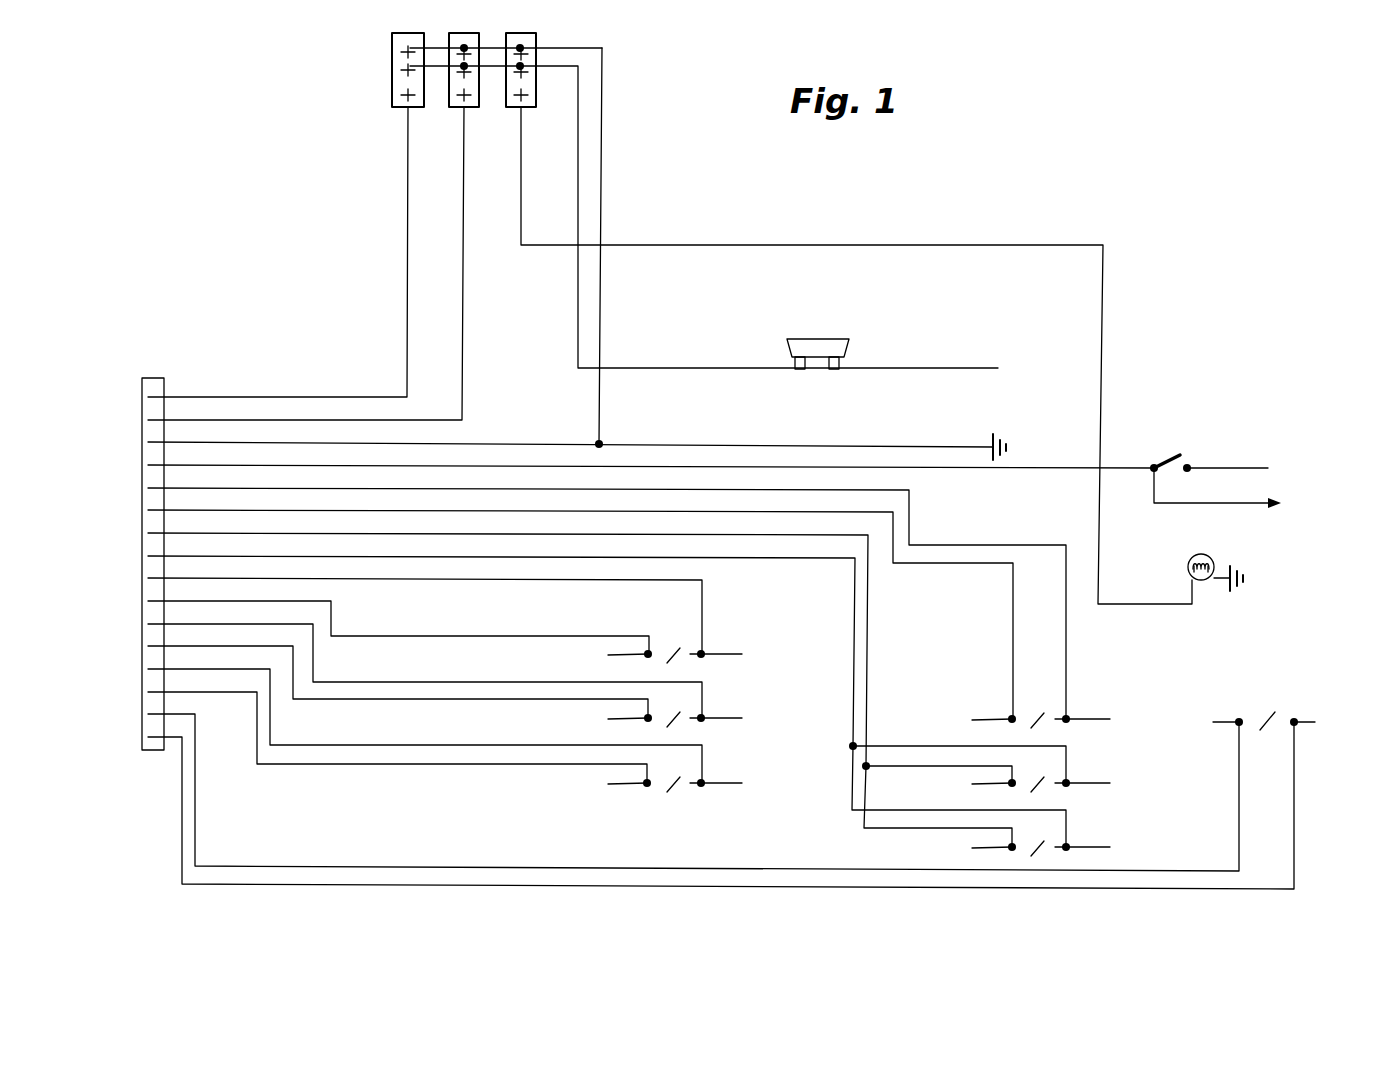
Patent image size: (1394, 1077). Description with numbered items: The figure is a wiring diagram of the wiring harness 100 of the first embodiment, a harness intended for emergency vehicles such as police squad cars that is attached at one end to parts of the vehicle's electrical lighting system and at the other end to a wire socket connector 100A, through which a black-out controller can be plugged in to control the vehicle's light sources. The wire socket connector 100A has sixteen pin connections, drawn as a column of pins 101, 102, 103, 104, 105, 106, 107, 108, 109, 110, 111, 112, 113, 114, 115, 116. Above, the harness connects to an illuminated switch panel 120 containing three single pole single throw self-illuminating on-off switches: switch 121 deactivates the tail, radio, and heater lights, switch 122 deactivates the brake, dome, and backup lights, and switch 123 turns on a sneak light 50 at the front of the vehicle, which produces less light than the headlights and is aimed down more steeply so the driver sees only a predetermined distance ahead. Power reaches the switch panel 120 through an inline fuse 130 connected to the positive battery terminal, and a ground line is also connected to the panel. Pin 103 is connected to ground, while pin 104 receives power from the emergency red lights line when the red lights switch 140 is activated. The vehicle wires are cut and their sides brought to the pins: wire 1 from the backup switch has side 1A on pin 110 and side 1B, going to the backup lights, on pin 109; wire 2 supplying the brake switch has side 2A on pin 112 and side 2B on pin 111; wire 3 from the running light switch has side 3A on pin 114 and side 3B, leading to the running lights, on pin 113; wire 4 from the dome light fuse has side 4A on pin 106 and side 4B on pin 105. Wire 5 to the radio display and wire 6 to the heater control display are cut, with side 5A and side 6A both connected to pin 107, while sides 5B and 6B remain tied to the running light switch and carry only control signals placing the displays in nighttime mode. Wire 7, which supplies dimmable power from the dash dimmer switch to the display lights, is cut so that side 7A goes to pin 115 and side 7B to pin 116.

The wiring harness 100 is at (1131, 219).
The wire socket connector 100A is at (150, 378).
The pin 101 is at (254, 257).
The pin 102 is at (282, 269).
The pin 103 is at (553, 254).
The pin 104 is at (627, 466).
The pin 105 is at (583, 599).
The pin 106 is at (556, 610).
The pin 107 is at (556, 685).
The pin 108 is at (583, 697).
The pin 109 is at (401, 611).
The pin 110 is at (374, 623).
The pin 111 is at (401, 666).
The pin 112 is at (374, 677).
The pin 113 is at (401, 721).
The pin 114 is at (373, 733).
The pin 115 is at (669, 788).
The pin 116 is at (697, 805).
The illuminated switch panel 120 is at (688, 206).
The switch 121 is at (395, 60).
The switch 122 is at (470, 107).
The switch 123 is at (536, 107).
The inline fuse 130 is at (789, 339).
The red lights switch 140 is at (1187, 460).
The sneak light 50 is at (1199, 554).
The wire 1 is at (679, 663).
The side of wire 1A is at (624, 656).
The side of wire 1B is at (710, 656).
The wire 2 is at (673, 727).
The side of wire 2A is at (624, 720).
The side of wire 2B is at (710, 720).
The wire 3 is at (663, 794).
The side of wire 3A is at (628, 786).
The side of wire 3B is at (712, 785).
The wire 4 is at (1017, 703).
The side of wire 4A is at (990, 722).
The side of wire 4B is at (1083, 719).
The wire 5 is at (1036, 771).
The side of wire 5A is at (990, 786).
The side of wire 5B is at (1083, 783).
The wire 6 is at (1040, 840).
The side of wire 6A is at (990, 850).
The side of wire 6B is at (1083, 847).
The wire 7 is at (1260, 756).
The side of wire 7A is at (1222, 726).
The side of wire 7B is at (1312, 726).